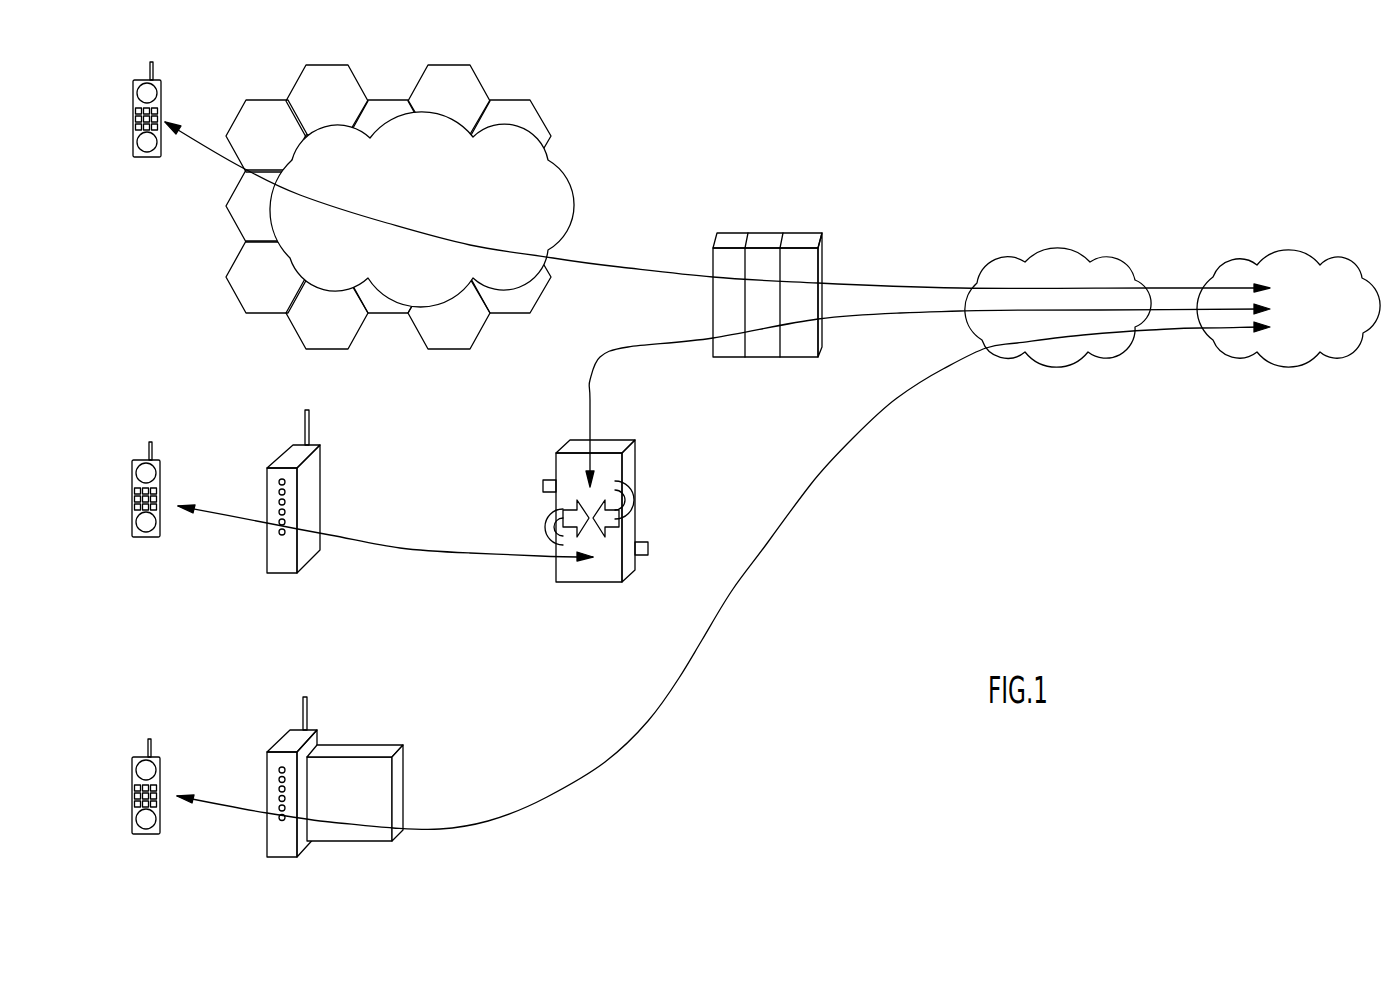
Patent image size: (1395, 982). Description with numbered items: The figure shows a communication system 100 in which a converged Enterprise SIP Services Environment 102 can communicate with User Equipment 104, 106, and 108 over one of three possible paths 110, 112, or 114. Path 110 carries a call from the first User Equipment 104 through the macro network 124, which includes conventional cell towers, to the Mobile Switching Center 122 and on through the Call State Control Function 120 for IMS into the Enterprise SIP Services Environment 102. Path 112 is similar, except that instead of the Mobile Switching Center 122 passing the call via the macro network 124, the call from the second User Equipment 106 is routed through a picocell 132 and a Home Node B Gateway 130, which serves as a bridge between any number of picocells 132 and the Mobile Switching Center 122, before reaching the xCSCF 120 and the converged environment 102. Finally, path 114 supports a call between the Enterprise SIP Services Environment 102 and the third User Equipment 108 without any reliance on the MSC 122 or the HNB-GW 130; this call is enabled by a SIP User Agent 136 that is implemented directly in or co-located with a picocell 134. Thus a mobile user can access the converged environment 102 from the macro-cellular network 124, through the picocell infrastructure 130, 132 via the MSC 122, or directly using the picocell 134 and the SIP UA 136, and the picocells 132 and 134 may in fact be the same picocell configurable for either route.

The communication system 100 is at (782, 150).
The Enterprise Session Initiation Protocol (SIP) Services Environment 102 is at (1287, 250).
The User Equipment 104 is at (132, 119).
The User Equipment 106 is at (132, 498).
The User Equipment 108 is at (132, 815).
The path 110 is at (850, 280).
The path 112 is at (607, 362).
The path 114 is at (813, 484).
The Call State Control Function (xCSCF) 120 is at (1060, 248).
The Mobile Switching Center (MSC) 122 is at (770, 233).
The macro network 124 is at (573, 208).
The Home Node B Gateway (HNB-GW) 130 is at (635, 462).
The picocell 132 is at (322, 497).
The picocell 134 is at (277, 740).
The SIP User Agent 136 is at (343, 743).